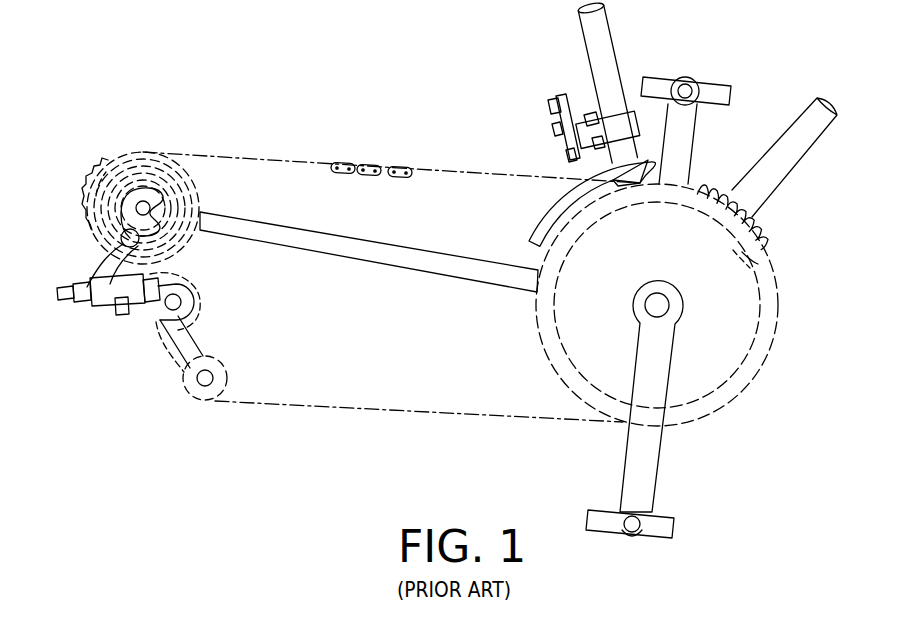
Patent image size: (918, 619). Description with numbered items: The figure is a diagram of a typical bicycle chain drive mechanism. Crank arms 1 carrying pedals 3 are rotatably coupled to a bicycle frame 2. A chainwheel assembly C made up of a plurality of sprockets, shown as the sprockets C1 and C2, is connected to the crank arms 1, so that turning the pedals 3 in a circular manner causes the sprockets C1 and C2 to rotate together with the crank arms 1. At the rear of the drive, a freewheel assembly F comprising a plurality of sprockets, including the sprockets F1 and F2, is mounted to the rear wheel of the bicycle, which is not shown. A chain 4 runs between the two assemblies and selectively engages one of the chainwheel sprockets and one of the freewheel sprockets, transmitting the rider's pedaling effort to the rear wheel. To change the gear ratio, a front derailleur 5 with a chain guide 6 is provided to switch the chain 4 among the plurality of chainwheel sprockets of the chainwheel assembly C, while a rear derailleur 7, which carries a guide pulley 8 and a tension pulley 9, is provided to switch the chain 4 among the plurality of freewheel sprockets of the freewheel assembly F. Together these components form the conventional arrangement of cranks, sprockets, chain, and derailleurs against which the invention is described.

The crank arm 1 is at (688, 150).
The bicycle frame 2 is at (592, 58).
The pedal 3 is at (716, 80).
The chain 4 is at (366, 165).
The front derailleur 5 is at (521, 101).
The chain guide 6 is at (553, 202).
The rear derailleur 7 is at (113, 313).
The guide pulley 8 is at (206, 304).
The tension pulley 9 is at (230, 384).
The chainwheel assembly C is at (770, 372).
The chainwheel sprocket C1 is at (760, 228).
The chainwheel sprocket C2 is at (760, 262).
The freewheel assembly F is at (70, 222).
The freewheel sprocket F1 is at (98, 164).
The freewheel sprocket F2 is at (86, 204).